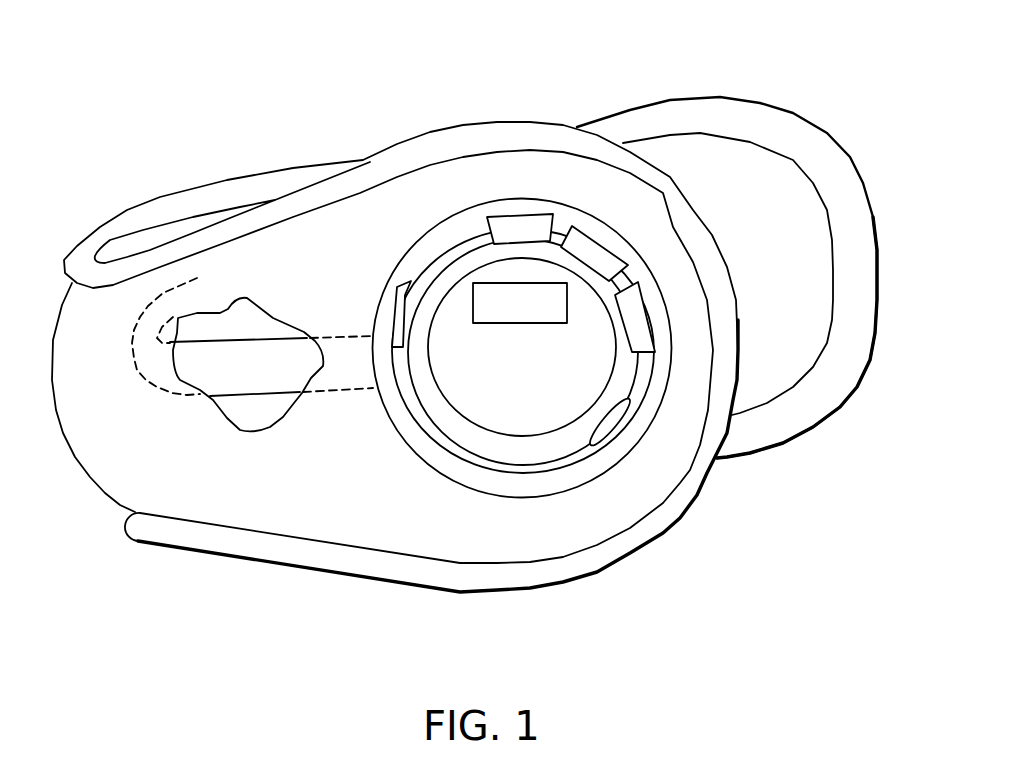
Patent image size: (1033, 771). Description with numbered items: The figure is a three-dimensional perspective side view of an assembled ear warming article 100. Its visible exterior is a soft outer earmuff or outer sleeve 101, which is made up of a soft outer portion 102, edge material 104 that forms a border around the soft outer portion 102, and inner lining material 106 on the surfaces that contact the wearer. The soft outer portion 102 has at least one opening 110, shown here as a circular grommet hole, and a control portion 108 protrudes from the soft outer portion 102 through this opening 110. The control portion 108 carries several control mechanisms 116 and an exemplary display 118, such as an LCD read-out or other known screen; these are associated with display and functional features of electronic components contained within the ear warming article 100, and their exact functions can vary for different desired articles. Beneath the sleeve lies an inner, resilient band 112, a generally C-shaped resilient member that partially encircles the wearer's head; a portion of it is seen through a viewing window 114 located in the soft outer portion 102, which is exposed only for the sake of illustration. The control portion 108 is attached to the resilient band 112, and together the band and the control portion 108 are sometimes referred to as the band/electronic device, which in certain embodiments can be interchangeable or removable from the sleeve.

The ear warming article 100 is at (236, 42).
The outer sleeve 101 is at (380, 532).
The soft outer portion 102 is at (107, 467).
The edge material 104 is at (653, 525).
The inner lining material 106 is at (776, 172).
The control portion 108 is at (483, 415).
The opening 110 is at (403, 411).
The resilient band 112 is at (245, 383).
The viewing window 114 is at (250, 433).
The control mechanisms 116 is at (588, 237).
The display 118 is at (522, 312).